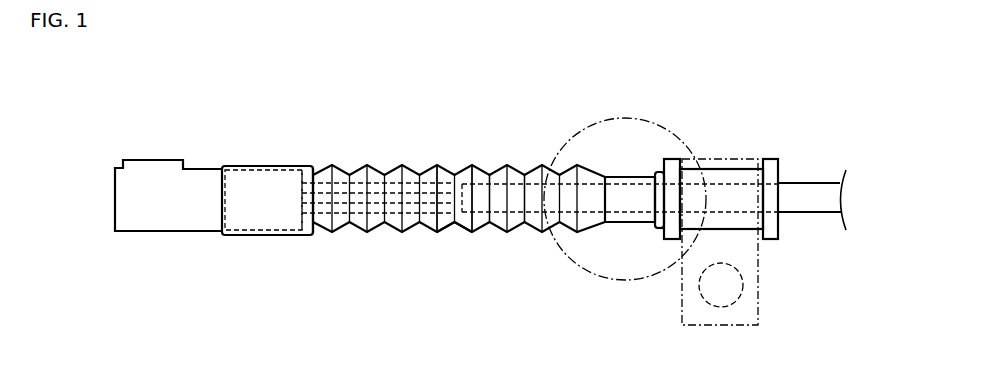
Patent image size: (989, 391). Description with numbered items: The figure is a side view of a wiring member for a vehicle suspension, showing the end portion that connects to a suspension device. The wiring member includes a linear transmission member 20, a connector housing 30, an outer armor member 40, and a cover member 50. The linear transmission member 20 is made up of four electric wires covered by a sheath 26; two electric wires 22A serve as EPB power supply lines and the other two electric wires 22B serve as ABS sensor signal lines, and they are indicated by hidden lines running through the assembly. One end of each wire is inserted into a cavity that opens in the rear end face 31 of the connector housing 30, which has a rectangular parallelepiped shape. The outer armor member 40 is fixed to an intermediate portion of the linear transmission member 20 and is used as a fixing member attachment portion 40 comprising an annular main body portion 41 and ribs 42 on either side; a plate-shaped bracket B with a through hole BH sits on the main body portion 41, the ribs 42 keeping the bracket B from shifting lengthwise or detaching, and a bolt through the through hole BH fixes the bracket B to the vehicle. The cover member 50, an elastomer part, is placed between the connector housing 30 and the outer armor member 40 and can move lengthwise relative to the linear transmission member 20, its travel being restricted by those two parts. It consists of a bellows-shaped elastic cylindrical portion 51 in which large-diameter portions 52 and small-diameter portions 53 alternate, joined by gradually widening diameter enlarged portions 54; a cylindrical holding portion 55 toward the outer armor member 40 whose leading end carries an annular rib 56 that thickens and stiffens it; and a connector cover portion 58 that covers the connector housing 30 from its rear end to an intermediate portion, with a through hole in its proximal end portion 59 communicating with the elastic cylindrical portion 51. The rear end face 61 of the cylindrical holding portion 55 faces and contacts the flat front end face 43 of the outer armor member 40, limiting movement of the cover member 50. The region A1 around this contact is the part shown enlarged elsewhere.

The linear transmission member 20 is at (815, 175).
The electric wires (EPB power supply lines) 22A is at (356, 166).
The electric wires (ABS sensor signal lines) 22B is at (340, 233).
The sheath 26 is at (478, 235).
The connector housing 30 is at (156, 232).
The rear end face 31 is at (305, 235).
The outer armor member 40 is at (721, 213).
The main body portion 41 is at (720, 169).
The ribs 42 is at (707, 106).
The front end face 43 is at (664, 159).
The cover member 50 is at (403, 242).
The elastic cylindrical portion 51 is at (530, 114).
The large-diameter portions 52 is at (472, 165).
The small-diameter portions 53 is at (524, 175).
The diameter enlarged portion 54 is at (466, 234).
The cylindrical holding portion 55 is at (625, 224).
The rib 56 is at (656, 229).
The connector cover portion 58 is at (235, 166).
The proximal end portion 59 is at (307, 166).
The rear end face 61 is at (666, 238).
The region A1 is at (628, 117).
The bracket (fixing member) B is at (758, 315).
The through hole BH is at (722, 300).